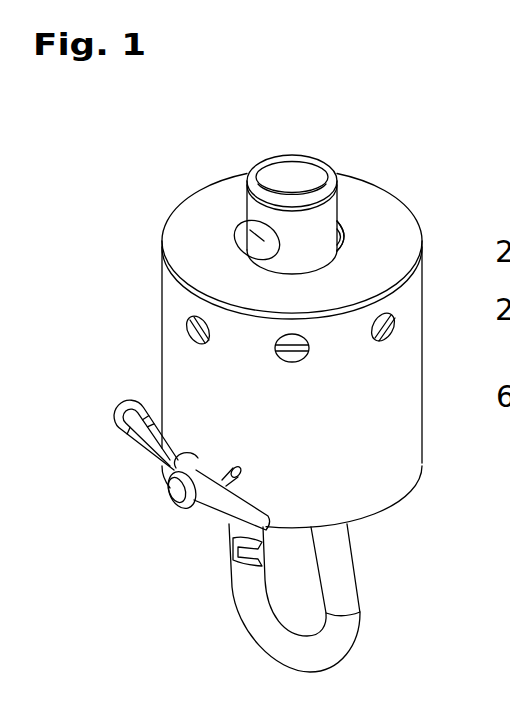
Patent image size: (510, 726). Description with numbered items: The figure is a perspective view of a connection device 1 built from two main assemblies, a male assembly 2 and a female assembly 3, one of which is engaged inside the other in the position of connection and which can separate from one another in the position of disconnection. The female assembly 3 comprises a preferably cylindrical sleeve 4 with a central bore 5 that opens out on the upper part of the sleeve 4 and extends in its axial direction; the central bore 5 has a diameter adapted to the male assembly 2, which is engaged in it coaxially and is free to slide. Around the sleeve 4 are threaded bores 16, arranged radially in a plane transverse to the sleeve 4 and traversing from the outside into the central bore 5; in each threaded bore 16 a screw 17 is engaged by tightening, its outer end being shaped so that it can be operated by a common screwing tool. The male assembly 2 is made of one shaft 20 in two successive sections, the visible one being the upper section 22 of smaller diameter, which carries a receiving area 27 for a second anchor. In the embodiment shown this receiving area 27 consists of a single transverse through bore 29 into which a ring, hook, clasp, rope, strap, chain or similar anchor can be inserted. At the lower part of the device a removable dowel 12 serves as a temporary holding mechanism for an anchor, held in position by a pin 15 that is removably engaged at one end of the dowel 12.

The connection device 1 is at (108, 209).
The male assembly 2 is at (311, 159).
The female assembly 3 is at (146, 351).
The sleeve 4 is at (402, 452).
The central bore 5 is at (317, 217).
The dowel 12 is at (167, 497).
The pin 15 is at (115, 421).
The threaded bores 16 is at (398, 338).
The screw 17 is at (187, 323).
The shaft 20 is at (305, 165).
The upper section 22 is at (347, 241).
The receiving area 27 is at (249, 229).
The transverse through bore 29 is at (340, 236).